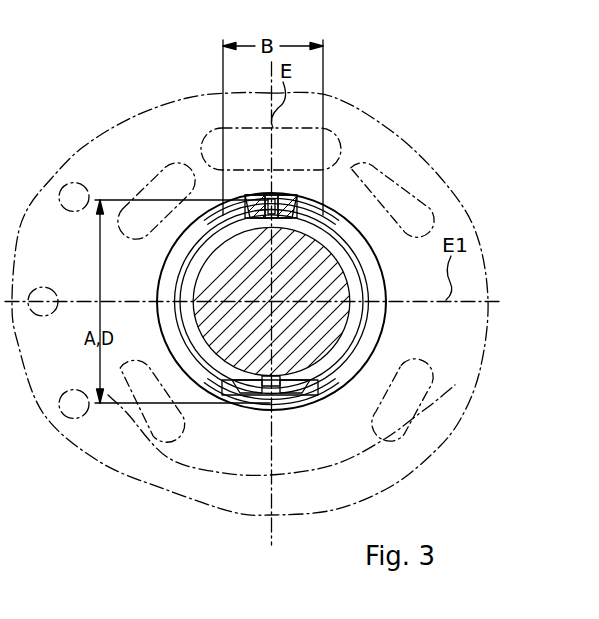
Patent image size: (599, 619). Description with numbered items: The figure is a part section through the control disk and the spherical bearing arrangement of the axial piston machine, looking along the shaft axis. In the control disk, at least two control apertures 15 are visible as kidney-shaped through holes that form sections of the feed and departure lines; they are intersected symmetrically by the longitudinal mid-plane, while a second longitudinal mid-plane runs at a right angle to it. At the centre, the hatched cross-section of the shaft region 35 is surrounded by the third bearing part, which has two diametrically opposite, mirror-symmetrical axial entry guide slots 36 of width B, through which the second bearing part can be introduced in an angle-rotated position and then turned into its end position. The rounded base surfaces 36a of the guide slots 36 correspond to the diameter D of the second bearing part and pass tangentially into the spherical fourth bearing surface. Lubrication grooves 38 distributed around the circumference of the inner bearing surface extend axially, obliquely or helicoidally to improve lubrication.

The control apertures 15 is at (318, 150).
The shaft (hatched cross-section) 35 is at (284, 233).
The axial entry guide slot 36 is at (244, 207).
The rounded base surfaces 36a is at (246, 196).
The lubrication grooves 38 is at (272, 226).